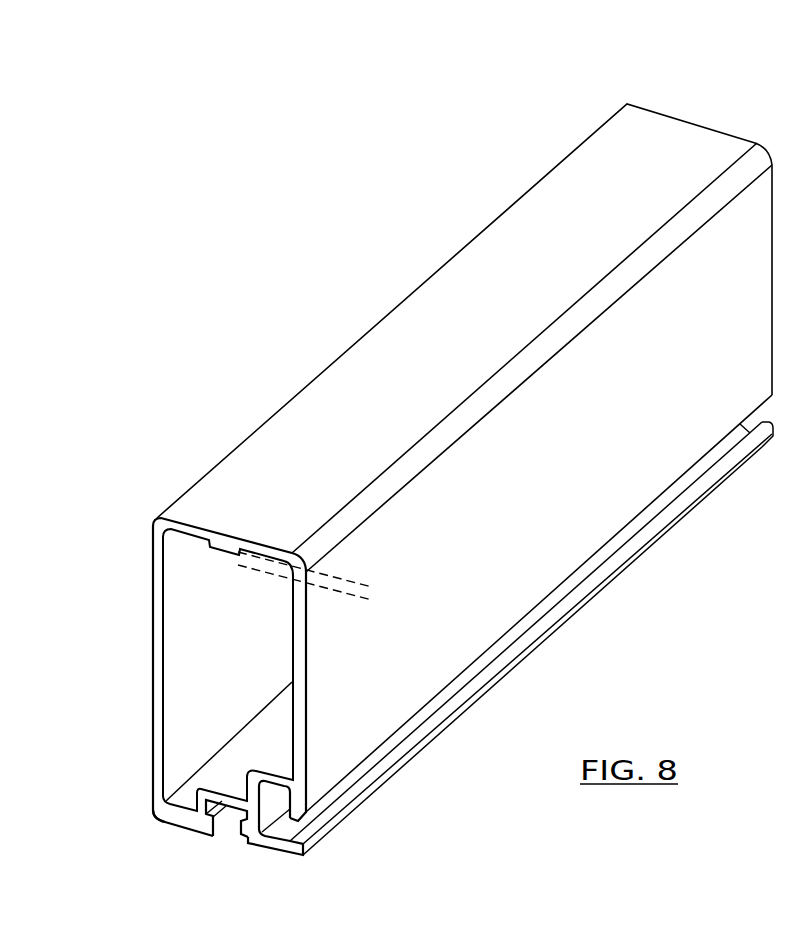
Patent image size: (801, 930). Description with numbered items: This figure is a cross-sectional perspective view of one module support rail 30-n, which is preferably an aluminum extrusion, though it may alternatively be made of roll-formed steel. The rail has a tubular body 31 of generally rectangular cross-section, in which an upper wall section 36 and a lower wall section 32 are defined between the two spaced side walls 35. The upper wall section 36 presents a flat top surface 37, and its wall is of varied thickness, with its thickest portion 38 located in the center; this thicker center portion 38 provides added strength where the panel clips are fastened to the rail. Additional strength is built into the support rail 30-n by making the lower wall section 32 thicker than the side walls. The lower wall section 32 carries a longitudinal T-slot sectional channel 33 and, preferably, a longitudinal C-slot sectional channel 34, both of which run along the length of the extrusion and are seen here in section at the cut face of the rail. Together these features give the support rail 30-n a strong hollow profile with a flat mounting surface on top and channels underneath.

The support rail 30-n is at (579, 488).
The tubular body 31 is at (150, 765).
The lower wall section 32 is at (137, 828).
The T-slot sectional channel 33 is at (213, 814).
The C-slot sectional channel 34 is at (292, 826).
The side walls 35 is at (292, 627).
The upper wall section 36 is at (670, 141).
The flat top surface 37 is at (469, 349).
The thickest portion 38 is at (358, 555).